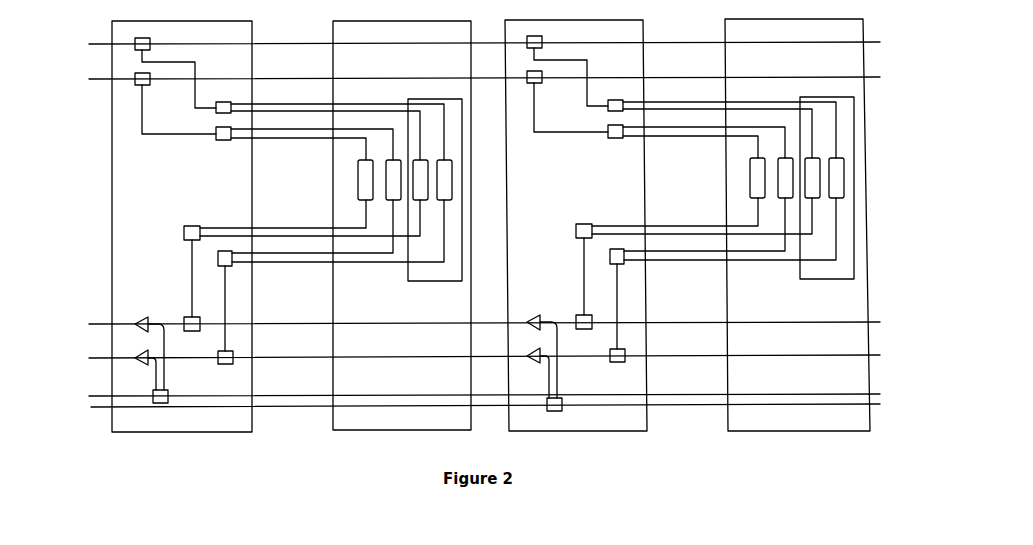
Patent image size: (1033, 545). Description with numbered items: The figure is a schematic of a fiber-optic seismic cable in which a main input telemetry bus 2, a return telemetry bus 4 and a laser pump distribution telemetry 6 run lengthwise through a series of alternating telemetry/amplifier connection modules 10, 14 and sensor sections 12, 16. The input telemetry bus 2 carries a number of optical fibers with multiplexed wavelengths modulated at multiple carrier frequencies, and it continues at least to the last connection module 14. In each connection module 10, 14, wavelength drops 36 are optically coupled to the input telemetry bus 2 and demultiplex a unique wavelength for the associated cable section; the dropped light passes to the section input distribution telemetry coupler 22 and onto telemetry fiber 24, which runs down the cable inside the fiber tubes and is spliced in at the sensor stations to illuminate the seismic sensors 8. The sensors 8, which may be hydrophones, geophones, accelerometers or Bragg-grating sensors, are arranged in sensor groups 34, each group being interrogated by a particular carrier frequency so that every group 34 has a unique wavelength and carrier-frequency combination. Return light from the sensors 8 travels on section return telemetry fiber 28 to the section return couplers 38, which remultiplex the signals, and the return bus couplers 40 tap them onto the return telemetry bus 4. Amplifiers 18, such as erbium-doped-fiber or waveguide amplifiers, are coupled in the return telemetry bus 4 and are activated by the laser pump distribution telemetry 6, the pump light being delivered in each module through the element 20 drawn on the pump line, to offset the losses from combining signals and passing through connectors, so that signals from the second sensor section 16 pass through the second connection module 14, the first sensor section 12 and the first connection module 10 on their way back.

The input telemetry bus 2 is at (84, 43).
The return telemetry bus 4 is at (85, 325).
The laser pump distribution telemetry 6 is at (92, 397).
The seismic sensors 8 is at (369, 184).
The connection module 10 is at (213, 432).
The sensor section 12 is at (415, 430).
The connection module 14 is at (605, 431).
The sensor section 16 is at (807, 431).
The amplifiers 18 is at (146, 366).
The output switch 20 is at (165, 404).
The section input distribution telemetry coupler 22 is at (216, 107).
The telemetry fiber 24 is at (315, 138).
The section return telemetry fiber 28 is at (315, 262).
The sensor group 34 is at (447, 281).
The wavelength drops 36 is at (151, 80).
The section return couplers 38 is at (218, 260).
The return bus couplers 40 is at (213, 376).